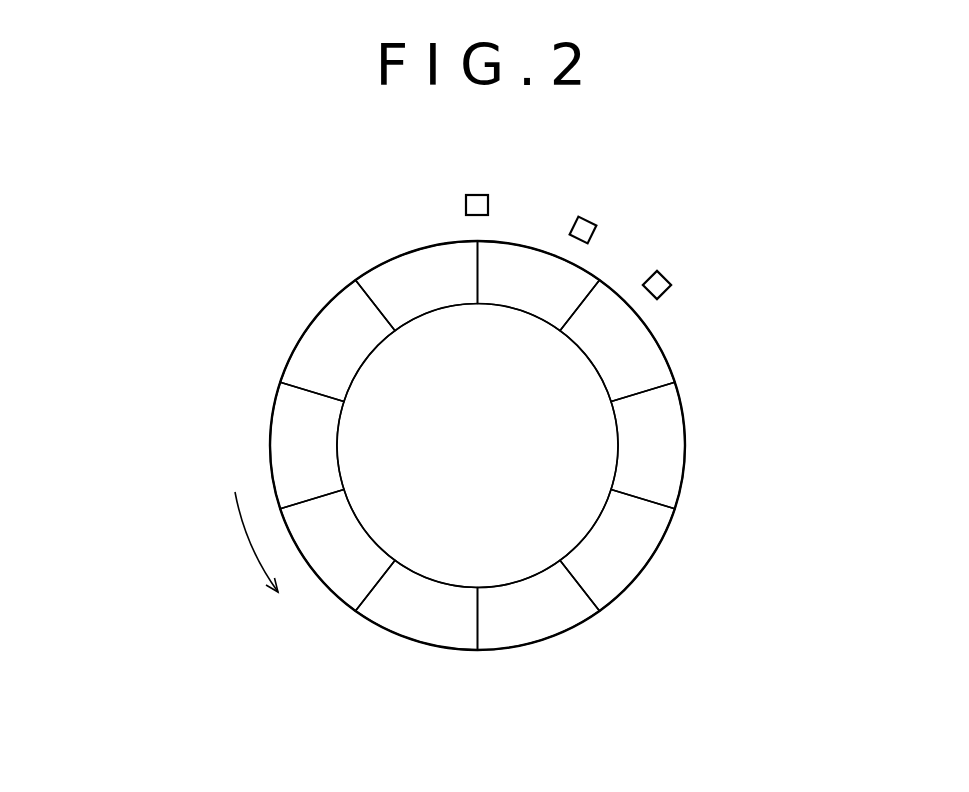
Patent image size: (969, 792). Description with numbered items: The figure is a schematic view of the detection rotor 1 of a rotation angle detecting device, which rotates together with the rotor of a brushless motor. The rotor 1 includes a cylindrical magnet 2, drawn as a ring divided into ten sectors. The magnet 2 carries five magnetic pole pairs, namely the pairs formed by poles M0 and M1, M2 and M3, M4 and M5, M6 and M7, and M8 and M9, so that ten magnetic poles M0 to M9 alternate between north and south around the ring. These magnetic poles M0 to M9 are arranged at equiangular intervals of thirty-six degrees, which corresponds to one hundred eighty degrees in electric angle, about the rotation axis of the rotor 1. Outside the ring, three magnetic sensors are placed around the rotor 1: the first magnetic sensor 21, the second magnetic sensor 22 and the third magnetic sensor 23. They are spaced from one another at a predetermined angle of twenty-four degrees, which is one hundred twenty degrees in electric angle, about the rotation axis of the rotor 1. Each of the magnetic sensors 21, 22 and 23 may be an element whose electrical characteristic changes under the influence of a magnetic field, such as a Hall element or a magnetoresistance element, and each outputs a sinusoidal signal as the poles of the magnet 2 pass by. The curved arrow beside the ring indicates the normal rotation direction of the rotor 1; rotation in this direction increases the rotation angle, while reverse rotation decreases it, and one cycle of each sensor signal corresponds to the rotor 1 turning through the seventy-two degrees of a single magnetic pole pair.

The rotor 1 is at (398, 238).
The magnet 2 is at (326, 303).
The first magnetic sensor 21 is at (476, 195).
The second magnetic sensor 22 is at (580, 221).
The third magnetic sensor 23 is at (671, 284).
The magnetic pole M0 is at (560, 277).
The magnetic pole M1 is at (652, 365).
The magnetic pole M2 is at (668, 475).
The magnetic pole M3 is at (622, 575).
The magnetic pole M4 is at (520, 632).
The magnetic pole M5 is at (433, 632).
The magnetic pole M6 is at (337, 573).
The magnetic pole M7 is at (293, 423).
The magnetic pole M8 is at (303, 367).
The magnetic pole M9 is at (378, 277).